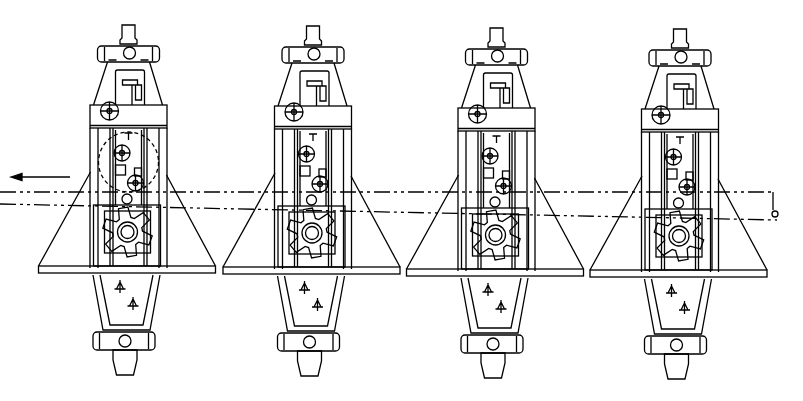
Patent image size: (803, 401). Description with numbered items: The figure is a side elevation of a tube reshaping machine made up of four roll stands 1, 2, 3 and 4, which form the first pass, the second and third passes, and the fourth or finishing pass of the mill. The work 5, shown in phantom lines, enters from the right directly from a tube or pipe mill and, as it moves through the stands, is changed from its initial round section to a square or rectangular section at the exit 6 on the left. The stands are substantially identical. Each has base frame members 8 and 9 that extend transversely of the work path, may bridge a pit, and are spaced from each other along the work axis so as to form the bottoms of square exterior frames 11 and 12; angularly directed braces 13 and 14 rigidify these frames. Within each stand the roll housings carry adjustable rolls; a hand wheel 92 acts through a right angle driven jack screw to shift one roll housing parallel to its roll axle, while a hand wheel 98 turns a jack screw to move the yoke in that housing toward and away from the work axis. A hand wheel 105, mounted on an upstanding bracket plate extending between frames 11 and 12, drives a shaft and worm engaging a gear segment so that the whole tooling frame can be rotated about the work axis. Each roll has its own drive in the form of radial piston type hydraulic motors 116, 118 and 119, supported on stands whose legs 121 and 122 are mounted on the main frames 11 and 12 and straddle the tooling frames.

The roll stand 1 is at (679, 204).
The roll stand 2 is at (495, 203).
The roll stand 3 is at (311, 201).
The roll stand 4 is at (47, 110).
The work 5 is at (756, 198).
The exit 6 is at (32, 206).
The base frame member 8 is at (337, 296).
The base frame member 9 is at (300, 303).
The square exterior frame 11 is at (367, 199).
The square exterior frame 12 is at (258, 199).
The angularly directed brace 13 is at (382, 221).
The angularly directed brace 14 is at (241, 220).
The hand wheel 92 is at (465, 150).
The hand wheel 98 is at (531, 180).
The hand wheel 105 is at (113, 400).
The radial piston type hydraulic motor 116 is at (424, 42).
The radial piston type hydraulic motor 118 is at (417, 351).
The radial piston type hydraulic motor 119 is at (423, 234).
The leg 121 is at (44, 400).
The leg 122 is at (249, 394).